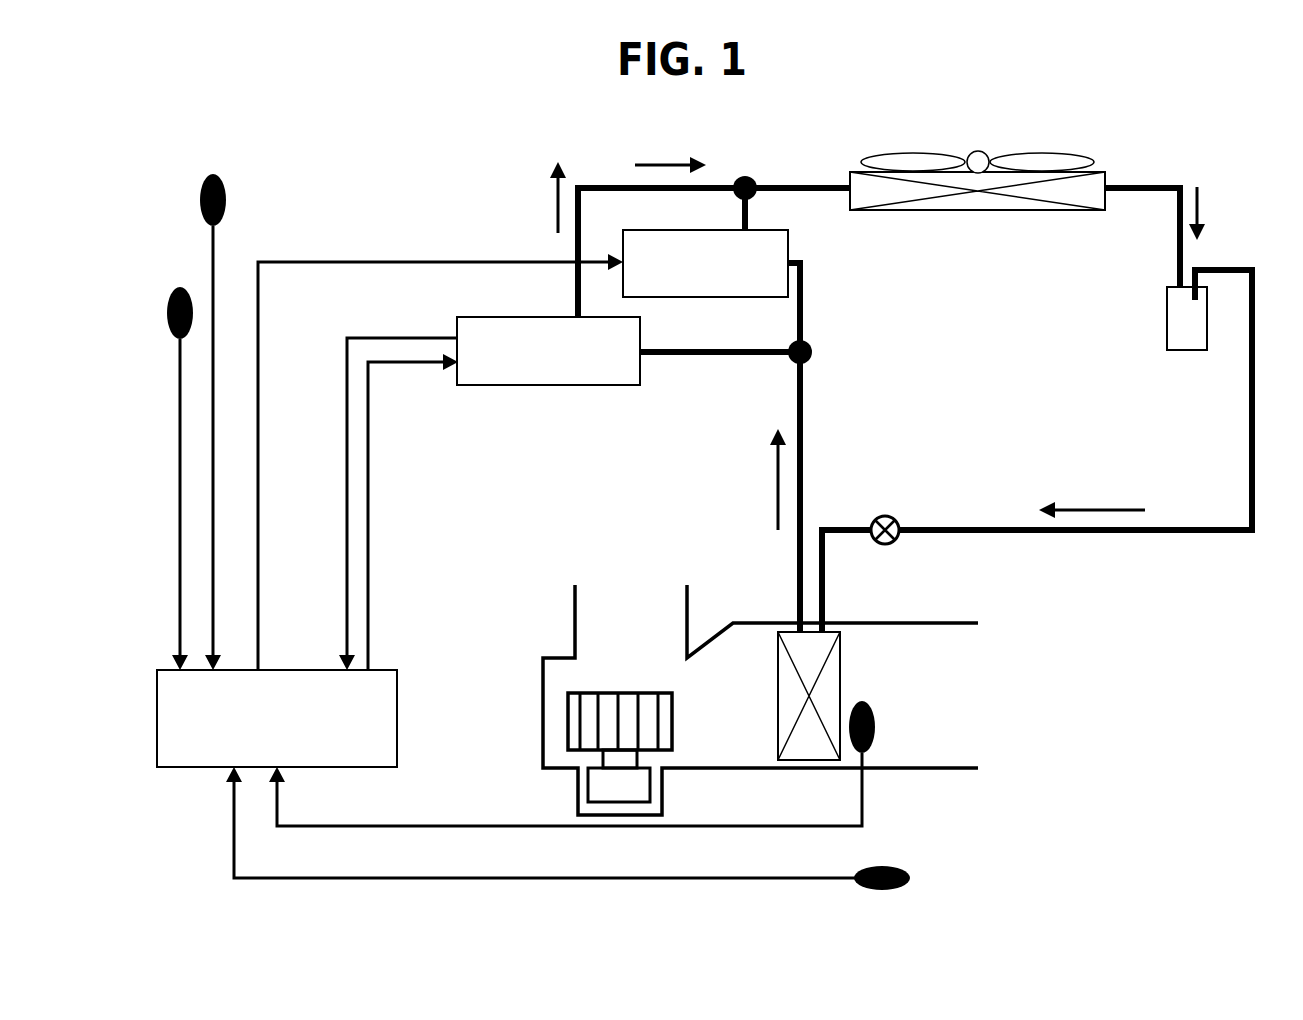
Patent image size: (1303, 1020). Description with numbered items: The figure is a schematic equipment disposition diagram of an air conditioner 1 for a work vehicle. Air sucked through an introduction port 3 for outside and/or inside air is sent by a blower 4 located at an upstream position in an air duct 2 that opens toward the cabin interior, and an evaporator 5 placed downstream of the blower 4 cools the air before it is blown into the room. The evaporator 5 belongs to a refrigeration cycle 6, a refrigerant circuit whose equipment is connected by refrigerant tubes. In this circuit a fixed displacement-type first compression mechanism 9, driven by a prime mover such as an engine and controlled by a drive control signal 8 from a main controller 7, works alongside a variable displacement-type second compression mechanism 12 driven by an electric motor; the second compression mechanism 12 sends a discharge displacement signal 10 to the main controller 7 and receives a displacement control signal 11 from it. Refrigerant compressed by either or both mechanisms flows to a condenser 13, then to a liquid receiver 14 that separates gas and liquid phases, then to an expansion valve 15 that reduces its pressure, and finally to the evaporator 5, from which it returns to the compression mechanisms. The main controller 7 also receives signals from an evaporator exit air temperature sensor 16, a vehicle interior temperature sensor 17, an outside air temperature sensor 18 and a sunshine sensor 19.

The air conditioner 1 is at (800, 162).
The air duct 2 is at (718, 620).
The introduction port 3 is at (632, 593).
The blower 4 is at (568, 730).
The evaporator 5 is at (777, 728).
The refrigeration cycle 6 is at (1259, 374).
The main controller 7 is at (299, 668).
The drive control signal 8 is at (440, 447).
The first compression mechanism 9 is at (770, 231).
The discharge displacement signal 10 is at (345, 368).
The displacement control signal 11 is at (369, 427).
The second compression mechanism 12 is at (535, 386).
The condenser 13 is at (915, 212).
The liquid receiver 14 is at (1166, 330).
The expansion valve 15 is at (893, 516).
The evaporator exit air temperature sensor 16 is at (873, 740).
The vehicle interior temperature sensor 17 is at (875, 890).
The outside air temperature sensor 18 is at (200, 198).
The sunshine sensor 19 is at (168, 313).